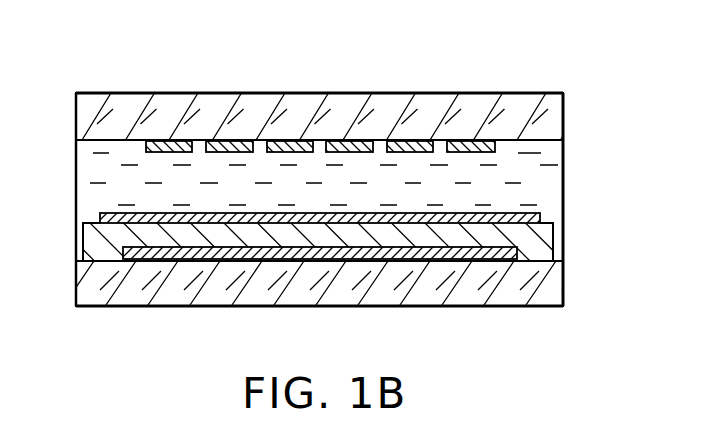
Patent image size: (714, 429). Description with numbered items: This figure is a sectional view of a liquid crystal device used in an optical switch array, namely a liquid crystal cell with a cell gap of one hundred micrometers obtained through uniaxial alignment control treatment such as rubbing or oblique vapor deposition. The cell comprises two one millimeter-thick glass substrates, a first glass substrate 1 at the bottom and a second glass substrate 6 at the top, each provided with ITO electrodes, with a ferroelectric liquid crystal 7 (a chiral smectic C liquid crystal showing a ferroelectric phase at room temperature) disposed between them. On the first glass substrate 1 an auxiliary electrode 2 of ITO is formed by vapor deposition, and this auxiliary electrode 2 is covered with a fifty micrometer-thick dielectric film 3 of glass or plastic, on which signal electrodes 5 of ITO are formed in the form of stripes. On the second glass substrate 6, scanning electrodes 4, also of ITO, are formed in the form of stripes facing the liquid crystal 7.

The first glass substrate 1 is at (553, 292).
The auxiliary electrode 2 is at (513, 249).
The dielectric film 3 is at (525, 238).
The scanning electrodes 4 is at (170, 148).
The signal electrodes 5 is at (113, 212).
The second glass substrate 6 is at (555, 119).
The ferroelectric liquid crystal 7 is at (546, 177).